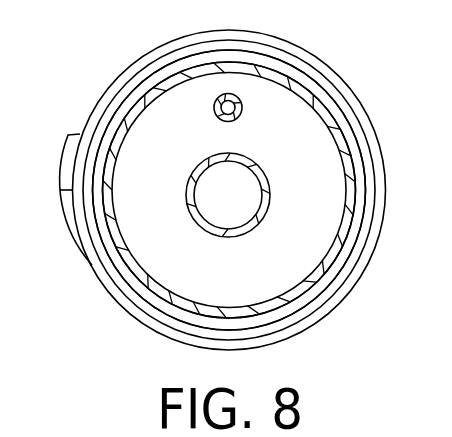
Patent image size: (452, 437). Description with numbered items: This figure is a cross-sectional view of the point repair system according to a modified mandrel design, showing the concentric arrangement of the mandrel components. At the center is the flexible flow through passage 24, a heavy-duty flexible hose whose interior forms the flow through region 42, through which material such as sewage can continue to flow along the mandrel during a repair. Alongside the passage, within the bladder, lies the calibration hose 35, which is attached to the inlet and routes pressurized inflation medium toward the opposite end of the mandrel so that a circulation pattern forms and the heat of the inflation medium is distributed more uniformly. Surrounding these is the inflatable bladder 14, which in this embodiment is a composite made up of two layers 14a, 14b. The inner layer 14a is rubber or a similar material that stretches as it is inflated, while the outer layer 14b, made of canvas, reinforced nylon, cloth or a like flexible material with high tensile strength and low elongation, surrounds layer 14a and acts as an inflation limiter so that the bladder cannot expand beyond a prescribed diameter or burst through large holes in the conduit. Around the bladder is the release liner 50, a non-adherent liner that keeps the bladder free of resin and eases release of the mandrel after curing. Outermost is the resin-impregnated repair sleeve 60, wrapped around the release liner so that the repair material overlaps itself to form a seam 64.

The inflatable bladder 14 is at (246, 172).
The layer 14a is at (321, 106).
The layer 14b is at (331, 108).
The flexible flow through passage 24 is at (223, 195).
The calibration hose 35 is at (214, 111).
The flow through region 42 is at (232, 193).
The release liner 50 is at (343, 276).
The resin-impregnated repair sleeve 60 is at (201, 190).
The seam 64 is at (46, 170).